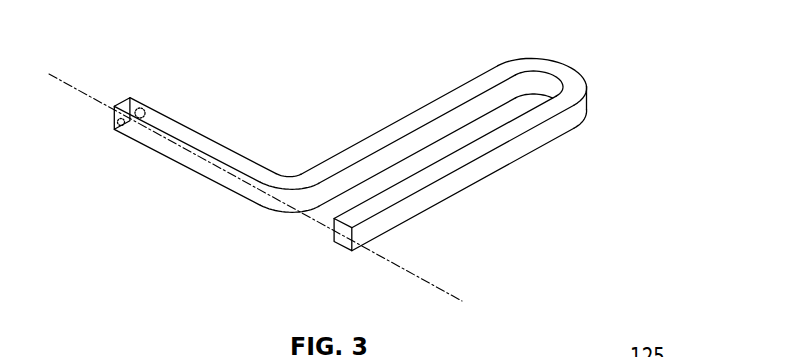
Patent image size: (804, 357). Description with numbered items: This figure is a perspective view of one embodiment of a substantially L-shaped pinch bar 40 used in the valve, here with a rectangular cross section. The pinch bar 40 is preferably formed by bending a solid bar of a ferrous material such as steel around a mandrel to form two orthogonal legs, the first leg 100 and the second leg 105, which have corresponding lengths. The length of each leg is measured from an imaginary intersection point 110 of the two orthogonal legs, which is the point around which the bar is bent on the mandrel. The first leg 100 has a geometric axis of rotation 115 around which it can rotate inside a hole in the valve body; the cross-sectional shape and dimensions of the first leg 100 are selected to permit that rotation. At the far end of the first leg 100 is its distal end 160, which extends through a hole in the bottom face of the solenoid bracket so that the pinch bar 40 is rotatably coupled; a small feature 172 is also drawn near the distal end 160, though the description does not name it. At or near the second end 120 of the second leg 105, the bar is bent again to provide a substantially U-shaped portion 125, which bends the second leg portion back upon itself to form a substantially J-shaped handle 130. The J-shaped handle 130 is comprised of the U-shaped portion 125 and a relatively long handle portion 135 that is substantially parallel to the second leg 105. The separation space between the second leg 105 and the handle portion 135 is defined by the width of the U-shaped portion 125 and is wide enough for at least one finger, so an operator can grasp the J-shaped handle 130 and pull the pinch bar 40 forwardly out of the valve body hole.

The pinch bar 40 is at (693, 96).
The first leg 100 is at (182, 167).
The second leg 105 is at (430, 103).
The intersection point 110 is at (288, 176).
The axis of rotation 115 is at (69, 84).
The second end 120 is at (503, 62).
The U-shaped portion 125 is at (575, 70).
The J-shaped handle 130 is at (552, 140).
The handle portion 135 is at (488, 176).
The distal end 160 is at (127, 97).
The hole 172 is at (119, 129).